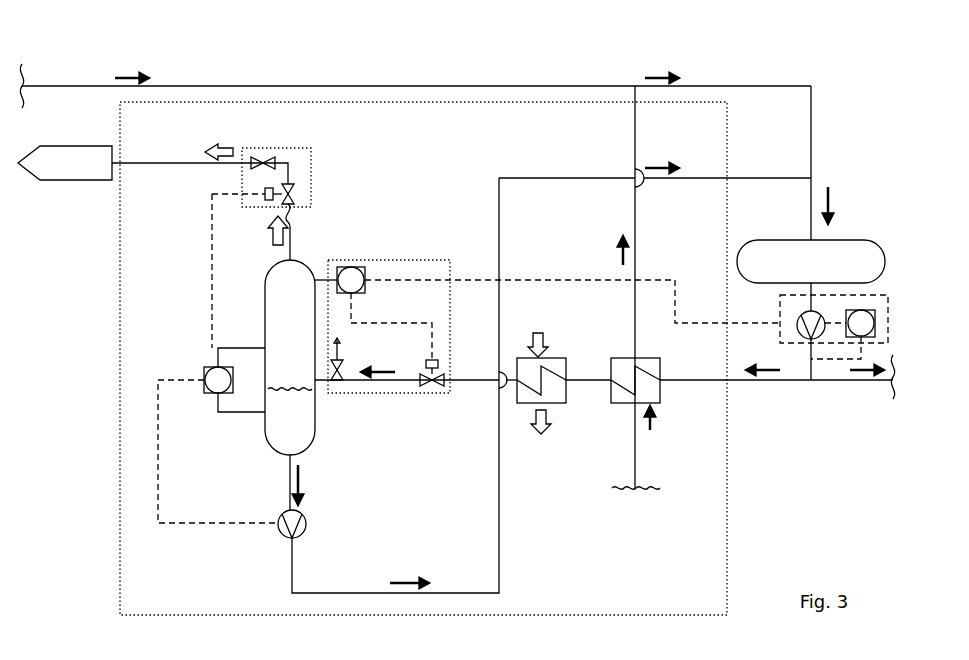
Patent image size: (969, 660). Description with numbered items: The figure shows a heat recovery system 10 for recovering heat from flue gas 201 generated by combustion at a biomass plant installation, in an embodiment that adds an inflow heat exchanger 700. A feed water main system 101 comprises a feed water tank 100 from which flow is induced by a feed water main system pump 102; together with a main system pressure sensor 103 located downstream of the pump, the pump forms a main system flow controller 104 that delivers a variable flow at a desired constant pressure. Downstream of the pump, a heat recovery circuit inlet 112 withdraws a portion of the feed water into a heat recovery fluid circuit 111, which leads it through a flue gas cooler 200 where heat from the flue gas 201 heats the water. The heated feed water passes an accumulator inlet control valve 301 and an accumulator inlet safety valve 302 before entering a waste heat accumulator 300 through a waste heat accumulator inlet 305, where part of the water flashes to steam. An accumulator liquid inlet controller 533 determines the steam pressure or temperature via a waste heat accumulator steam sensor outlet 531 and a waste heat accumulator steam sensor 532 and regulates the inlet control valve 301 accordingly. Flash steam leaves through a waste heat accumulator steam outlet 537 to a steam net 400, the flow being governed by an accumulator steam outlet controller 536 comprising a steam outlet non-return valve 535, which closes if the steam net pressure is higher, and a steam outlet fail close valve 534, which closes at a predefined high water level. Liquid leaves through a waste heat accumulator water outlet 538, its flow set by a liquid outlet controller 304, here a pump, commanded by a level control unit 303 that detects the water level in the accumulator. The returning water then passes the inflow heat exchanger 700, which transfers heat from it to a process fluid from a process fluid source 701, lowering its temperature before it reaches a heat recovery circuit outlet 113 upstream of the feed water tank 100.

The heat recovery system 10 is at (119, 261).
The feed water tank 100 is at (811, 184).
The feed water main system 101 is at (330, 86).
The feed water main system pump 102 is at (797, 315).
The main system pressure sensor 103 is at (865, 340).
The main system flow controller 104 is at (780, 332).
The heat recovery fluid circuit 111 is at (292, 572).
The heat recovery circuit inlet 112 is at (806, 383).
The heat recovery circuit outlet 113 is at (782, 178).
The flue gas cooler 200 is at (553, 358).
The flue gas 201 is at (540, 334).
The waste heat accumulator 300 is at (290, 357).
The accumulator inlet control valve 301 is at (450, 350).
The accumulator inlet safety valve 302 is at (344, 372).
The level control unit 303 is at (204, 372).
The liquid outlet controller 304 is at (306, 527).
The waste heat accumulator inlet 305 is at (325, 383).
The steam net 400 is at (153, 164).
The waste heat accumulator steam sensor outlet 531 is at (327, 276).
The waste heat accumulator steam sensor 532 is at (353, 266).
The accumulator liquid inlet controller 533 is at (425, 260).
The steam outlet fail close valve 534 is at (300, 198).
The steam outlet non-return valve 535 is at (262, 157).
The accumulator steam outlet controller 536 is at (311, 163).
The waste heat accumulator steam outlet 537 is at (288, 250).
The waste heat accumulator water outlet 538 is at (289, 462).
The inflow heat exchanger 700 is at (660, 392).
The process fluid source 701 is at (635, 430).